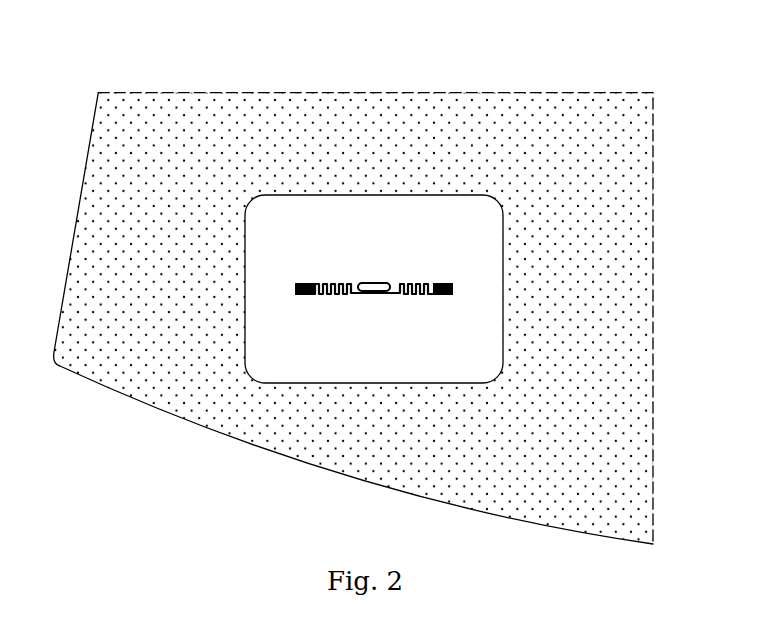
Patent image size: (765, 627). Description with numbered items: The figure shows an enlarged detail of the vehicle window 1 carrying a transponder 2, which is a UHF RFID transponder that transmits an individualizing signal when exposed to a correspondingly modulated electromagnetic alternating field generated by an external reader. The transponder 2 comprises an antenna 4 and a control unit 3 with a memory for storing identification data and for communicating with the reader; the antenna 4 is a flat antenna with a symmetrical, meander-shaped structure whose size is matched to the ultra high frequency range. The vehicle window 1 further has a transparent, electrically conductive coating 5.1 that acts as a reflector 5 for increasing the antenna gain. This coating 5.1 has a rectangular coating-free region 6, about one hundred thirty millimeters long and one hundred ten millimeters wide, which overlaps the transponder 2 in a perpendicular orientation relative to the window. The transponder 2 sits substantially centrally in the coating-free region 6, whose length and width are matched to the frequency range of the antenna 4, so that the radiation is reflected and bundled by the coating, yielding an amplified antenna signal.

The vehicle window 1 is at (353, 272).
The transponder 2 is at (453, 283).
The control unit 3 is at (371, 268).
The antenna 4 is at (326, 268).
The reflector 5 is at (353, 318).
The transparent, electrically conductive coating 5.1 is at (327, 425).
The coating-free region 6 is at (287, 362).